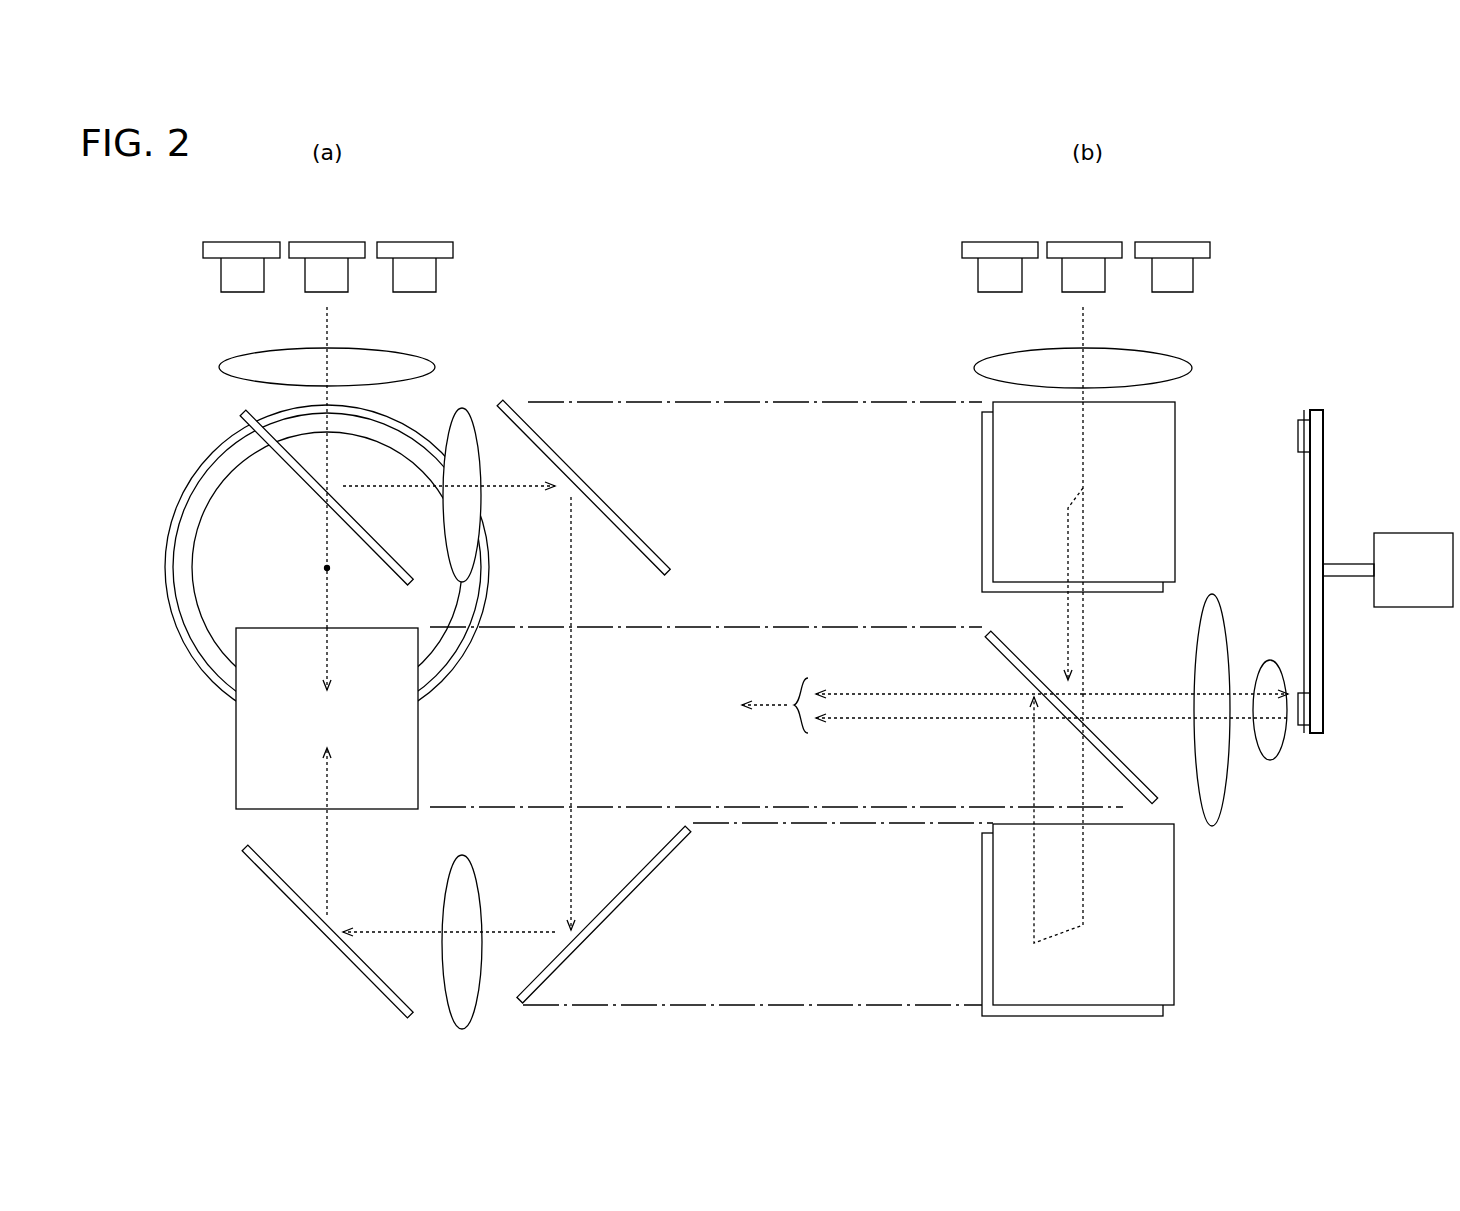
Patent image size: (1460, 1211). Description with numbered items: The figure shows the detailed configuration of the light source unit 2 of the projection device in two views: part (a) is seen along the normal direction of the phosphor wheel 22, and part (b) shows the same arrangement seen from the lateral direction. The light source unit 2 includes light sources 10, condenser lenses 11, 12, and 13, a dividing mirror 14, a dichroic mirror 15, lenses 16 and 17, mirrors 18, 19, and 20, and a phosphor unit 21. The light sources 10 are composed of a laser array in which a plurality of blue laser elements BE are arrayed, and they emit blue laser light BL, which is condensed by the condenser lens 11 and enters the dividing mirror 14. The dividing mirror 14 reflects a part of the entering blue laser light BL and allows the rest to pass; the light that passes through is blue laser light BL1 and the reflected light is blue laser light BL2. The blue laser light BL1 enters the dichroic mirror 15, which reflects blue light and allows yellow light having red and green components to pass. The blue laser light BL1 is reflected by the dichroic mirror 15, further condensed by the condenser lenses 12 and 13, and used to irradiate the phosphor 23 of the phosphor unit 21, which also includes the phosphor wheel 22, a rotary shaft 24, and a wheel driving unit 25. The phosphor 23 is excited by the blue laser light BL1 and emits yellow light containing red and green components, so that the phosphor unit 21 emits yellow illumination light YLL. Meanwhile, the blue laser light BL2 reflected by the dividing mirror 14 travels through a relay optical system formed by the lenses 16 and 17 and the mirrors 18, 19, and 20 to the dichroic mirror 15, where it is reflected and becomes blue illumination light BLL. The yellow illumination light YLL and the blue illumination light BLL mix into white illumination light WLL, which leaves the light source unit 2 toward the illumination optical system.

The light source unit 2 is at (188, 268).
The light sources 10 is at (440, 226).
The blue laser elements BE is at (456, 250).
The condenser lens 11 is at (410, 352).
The condenser lens 12 is at (1222, 800).
The condenser lens 13 is at (1280, 745).
The dividing mirror 14 is at (238, 409).
The dichroic mirror 15 is at (236, 739).
The lens 16 is at (462, 405).
The lens 17 is at (481, 875).
The mirror 18 is at (590, 482).
The mirror 19 is at (615, 912).
The mirror 20 is at (315, 933).
The phosphor unit 21 is at (183, 647).
The phosphor wheel 22 is at (207, 552).
The phosphor 23 is at (197, 480).
The rotary shaft 24 is at (1348, 577).
The wheel driving unit 25 is at (1412, 533).
The blue laser light BL is at (329, 312).
The blue laser light BL1 is at (322, 537).
The blue laser light BL2 is at (500, 490).
The white illumination light WLL is at (775, 703).
The blue illumination light BLL is at (853, 690).
The yellow illumination light YLL is at (853, 720).